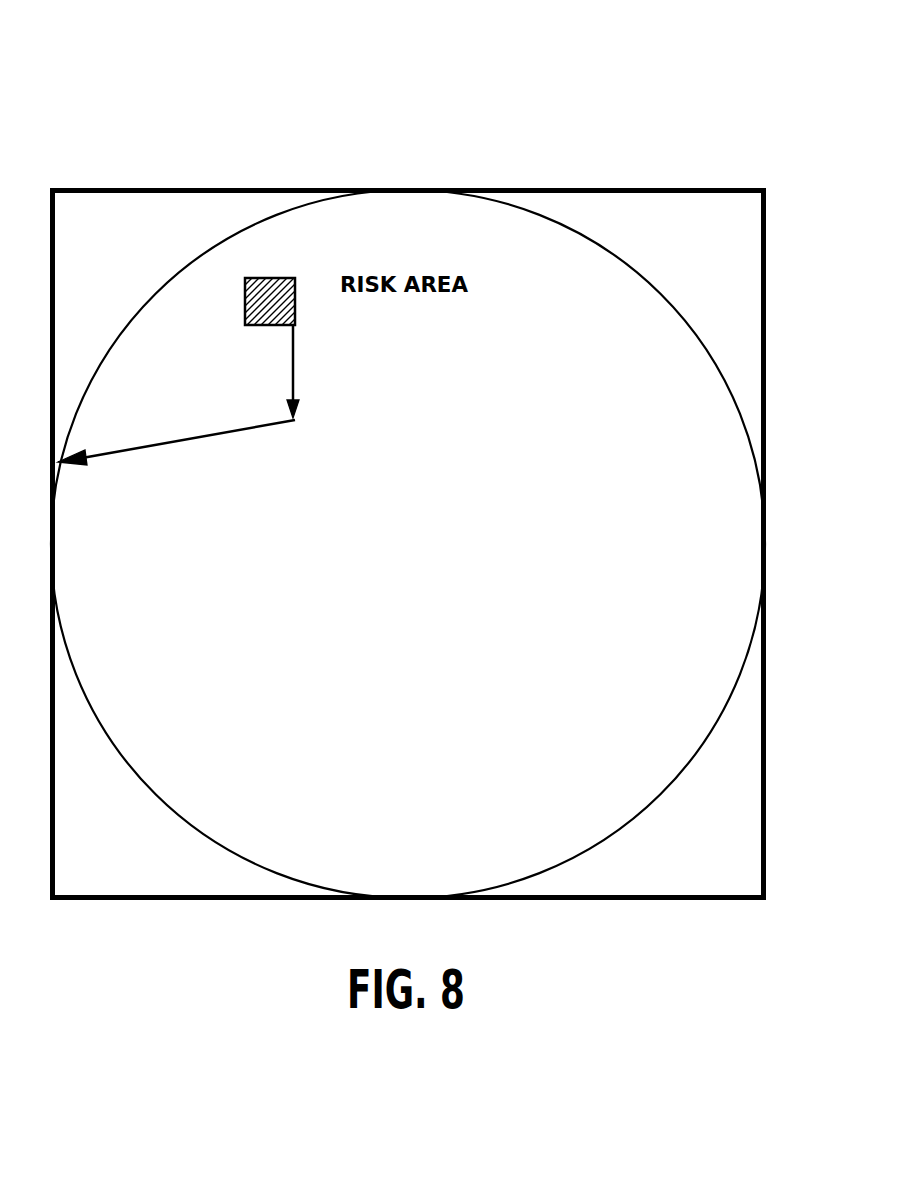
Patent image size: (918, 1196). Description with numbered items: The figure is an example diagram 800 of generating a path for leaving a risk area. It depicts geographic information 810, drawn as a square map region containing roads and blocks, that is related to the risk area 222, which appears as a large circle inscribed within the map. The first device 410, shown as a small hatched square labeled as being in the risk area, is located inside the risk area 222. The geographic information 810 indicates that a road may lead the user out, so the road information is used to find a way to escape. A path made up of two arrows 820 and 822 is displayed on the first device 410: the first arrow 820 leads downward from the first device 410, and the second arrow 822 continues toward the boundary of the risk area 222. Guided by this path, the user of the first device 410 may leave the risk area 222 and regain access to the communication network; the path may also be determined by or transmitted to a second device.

The example diagram 800 is at (190, 110).
The geographic information 810 is at (672, 188).
The risk area 222 is at (650, 283).
The first device 410 is at (276, 278).
The arrow 820 is at (293, 371).
The arrow 822 is at (176, 442).